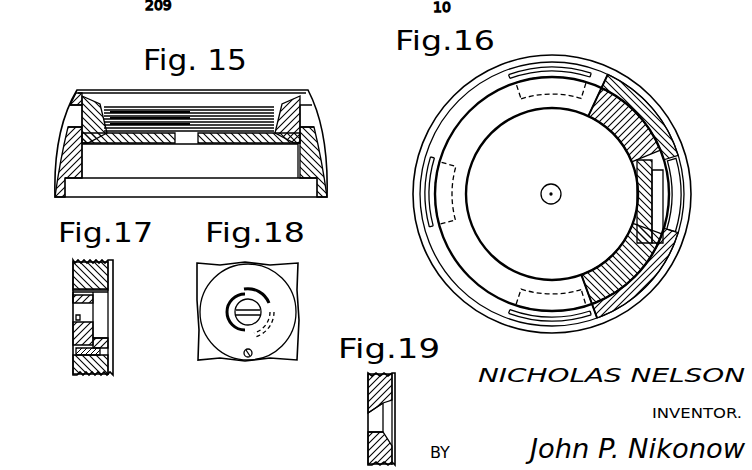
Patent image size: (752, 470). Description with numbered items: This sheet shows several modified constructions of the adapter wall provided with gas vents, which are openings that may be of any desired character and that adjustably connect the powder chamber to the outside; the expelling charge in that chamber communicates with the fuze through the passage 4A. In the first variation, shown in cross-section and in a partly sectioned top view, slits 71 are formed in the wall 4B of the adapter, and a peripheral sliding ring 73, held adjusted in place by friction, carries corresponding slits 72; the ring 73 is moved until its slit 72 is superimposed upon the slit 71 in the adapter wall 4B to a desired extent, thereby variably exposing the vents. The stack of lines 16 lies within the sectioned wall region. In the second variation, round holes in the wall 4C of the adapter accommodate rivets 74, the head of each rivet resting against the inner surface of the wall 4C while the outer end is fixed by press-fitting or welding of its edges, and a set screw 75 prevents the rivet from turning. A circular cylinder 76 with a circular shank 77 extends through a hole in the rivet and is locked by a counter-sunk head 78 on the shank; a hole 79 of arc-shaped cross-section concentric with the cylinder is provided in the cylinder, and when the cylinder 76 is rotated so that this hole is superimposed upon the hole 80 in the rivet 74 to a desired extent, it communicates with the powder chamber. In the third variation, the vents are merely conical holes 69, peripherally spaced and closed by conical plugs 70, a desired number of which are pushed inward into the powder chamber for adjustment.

In FIG. 16, the passage 4A is at (548, 203).
In FIG. 15, the wall of the adapter 4B is at (322, 158).
In FIG. 16, the wall of the adapter 4B is at (622, 140).
In FIG. 17, the wall of the adapter 4C is at (82, 375).
In FIG. 18, the wall of the adapter 4C is at (298, 283).
In FIG. 15, the leaf spring stack 16 is at (259, 117).
In FIG. 19, the conical holes 69 is at (393, 416).
In FIG. 19, the conical plugs 70 is at (378, 420).
In FIG. 15, the slits 71 is at (90, 143).
In FIG. 16, the slits 71 is at (658, 196).
In FIG. 15, the slits 72 is at (66, 117).
In FIG. 16, the slits 72 is at (668, 174).
In FIG. 15, the peripheral sliding ring 73 is at (75, 97).
In FIG. 16, the peripheral sliding ring 73 is at (645, 132).
In FIG. 17, the rivets 74 is at (108, 346).
In FIG. 18, the rivets 74 is at (282, 297).
In FIG. 17, the set screw 75 is at (80, 352).
In FIG. 18, the set screw 75 is at (247, 360).
In FIG. 17, the circular cylinder 76 is at (108, 318).
In FIG. 17, the circular shank 77 is at (85, 318).
In FIG. 17, the counter-sunk head 78 is at (73, 306).
In FIG. 18, the counter-sunk head 78 is at (262, 314).
In FIG. 17, the hole 79 is at (93, 292).
In FIG. 18, the hole 79 is at (259, 290).
In FIG. 17, the hole 80 is at (73, 292).
In FIG. 18, the hole 80 is at (230, 320).